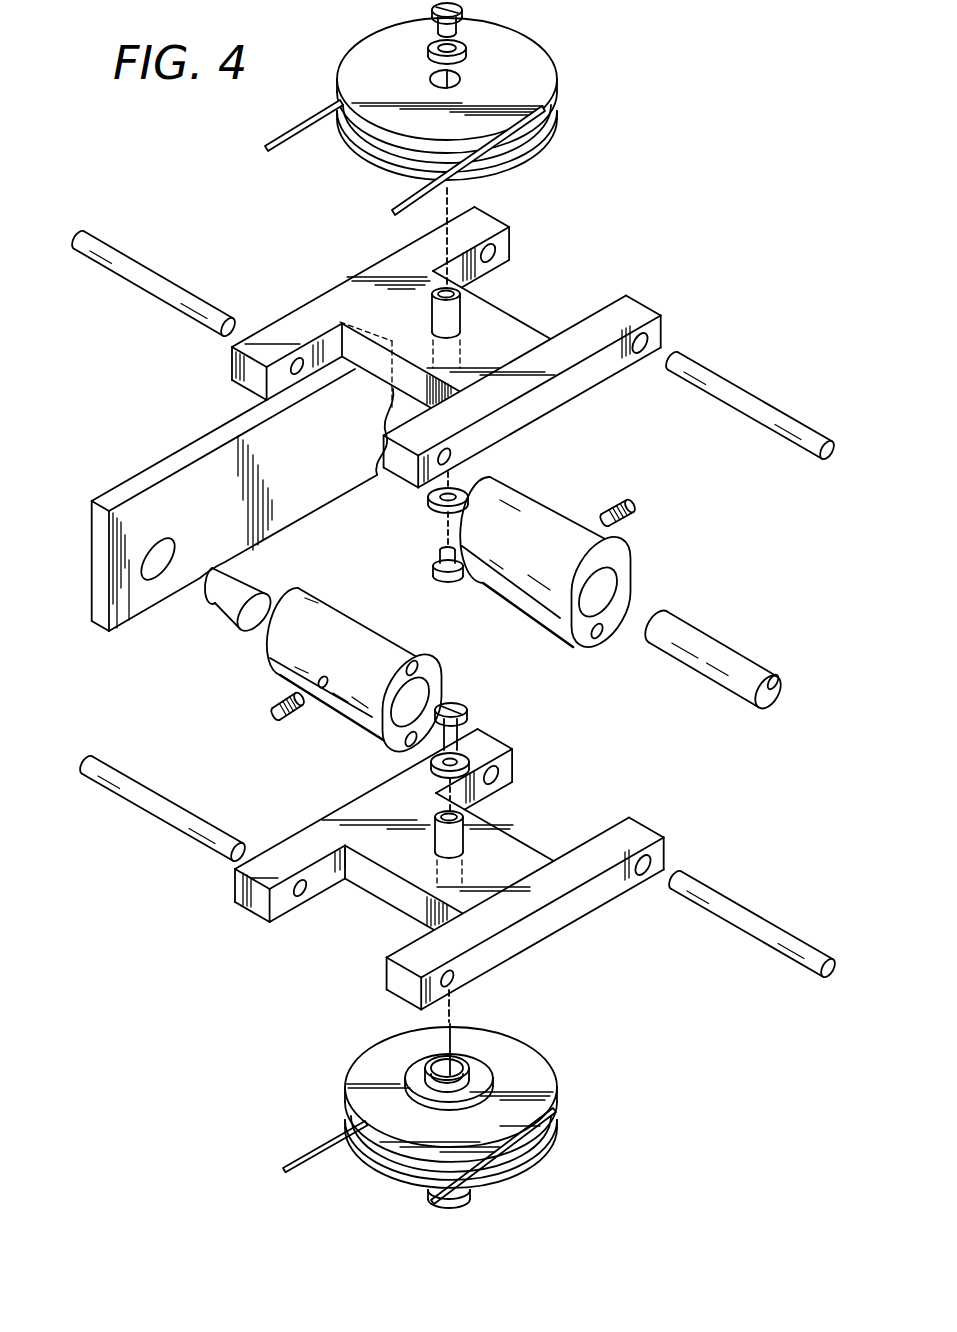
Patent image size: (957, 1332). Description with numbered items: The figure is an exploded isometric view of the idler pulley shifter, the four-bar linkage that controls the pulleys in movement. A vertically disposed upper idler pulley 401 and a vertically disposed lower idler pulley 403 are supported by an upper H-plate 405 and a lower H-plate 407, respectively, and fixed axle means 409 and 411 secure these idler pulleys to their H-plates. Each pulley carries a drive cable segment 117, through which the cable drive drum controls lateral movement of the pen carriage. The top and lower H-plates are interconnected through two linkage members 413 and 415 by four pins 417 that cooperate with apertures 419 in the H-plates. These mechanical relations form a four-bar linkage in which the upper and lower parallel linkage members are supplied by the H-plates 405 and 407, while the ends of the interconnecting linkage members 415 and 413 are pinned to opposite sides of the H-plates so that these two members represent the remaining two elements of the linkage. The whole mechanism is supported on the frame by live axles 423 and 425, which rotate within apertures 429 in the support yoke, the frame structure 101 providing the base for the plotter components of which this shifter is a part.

The frame structure 101 is at (178, 457).
The drive cable segment 117 is at (396, 210).
The upper idler pulley 401 is at (538, 77).
The lower idler pulley 403 is at (530, 1058).
The upper H-plate 405 is at (631, 302).
The lower H-plate 407 is at (636, 823).
The fixed axle means 409 is at (455, 310).
The fixed axle means 411 is at (485, 820).
The linkage member 413 is at (532, 490).
The linkage member 415 is at (272, 659).
The pins 417 is at (157, 287).
The apertures 419 is at (497, 250).
The live axle 423 is at (730, 648).
The live axle 425 is at (247, 583).
The apertures 429 is at (158, 537).